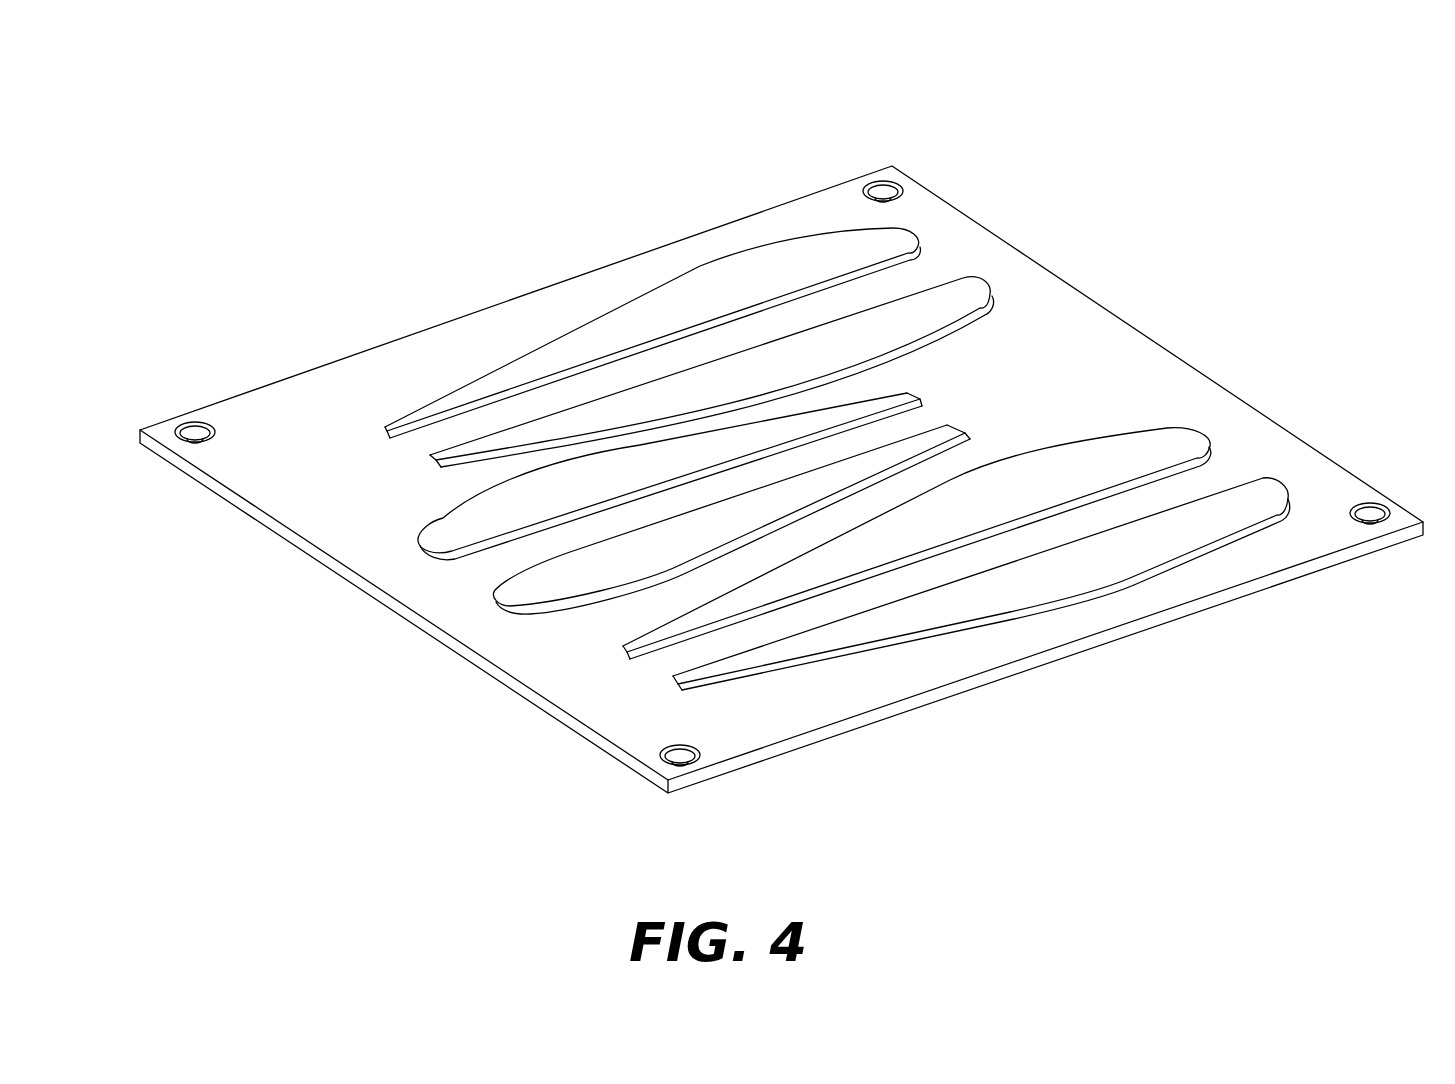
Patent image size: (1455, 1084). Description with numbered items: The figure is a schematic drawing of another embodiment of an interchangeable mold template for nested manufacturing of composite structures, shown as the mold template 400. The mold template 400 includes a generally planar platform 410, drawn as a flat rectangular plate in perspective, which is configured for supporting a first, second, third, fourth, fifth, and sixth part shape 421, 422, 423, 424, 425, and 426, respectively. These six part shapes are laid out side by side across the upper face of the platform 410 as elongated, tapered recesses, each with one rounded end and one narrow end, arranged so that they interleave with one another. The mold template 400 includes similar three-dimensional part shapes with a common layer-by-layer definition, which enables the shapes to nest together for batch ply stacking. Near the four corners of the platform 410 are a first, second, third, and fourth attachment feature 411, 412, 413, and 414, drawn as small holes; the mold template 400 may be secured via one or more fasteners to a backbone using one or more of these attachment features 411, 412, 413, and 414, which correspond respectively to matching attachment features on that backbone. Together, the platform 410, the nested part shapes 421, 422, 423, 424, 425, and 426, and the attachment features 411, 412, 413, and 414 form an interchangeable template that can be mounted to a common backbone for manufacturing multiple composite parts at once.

The mold template 400 is at (304, 126).
The generally planar platform 410 is at (296, 397).
The first attachment feature 411 is at (168, 442).
The second attachment feature 412 is at (887, 178).
The third attachment feature 413 is at (1374, 505).
The fourth attachment feature 414 is at (690, 768).
The first part shape 421 is at (707, 280).
The second part shape 422 is at (952, 296).
The third part shape 423 is at (470, 523).
The fourth part shape 424 is at (528, 587).
The fifth part shape 425 is at (1178, 444).
The sixth part shape 426 is at (1253, 497).